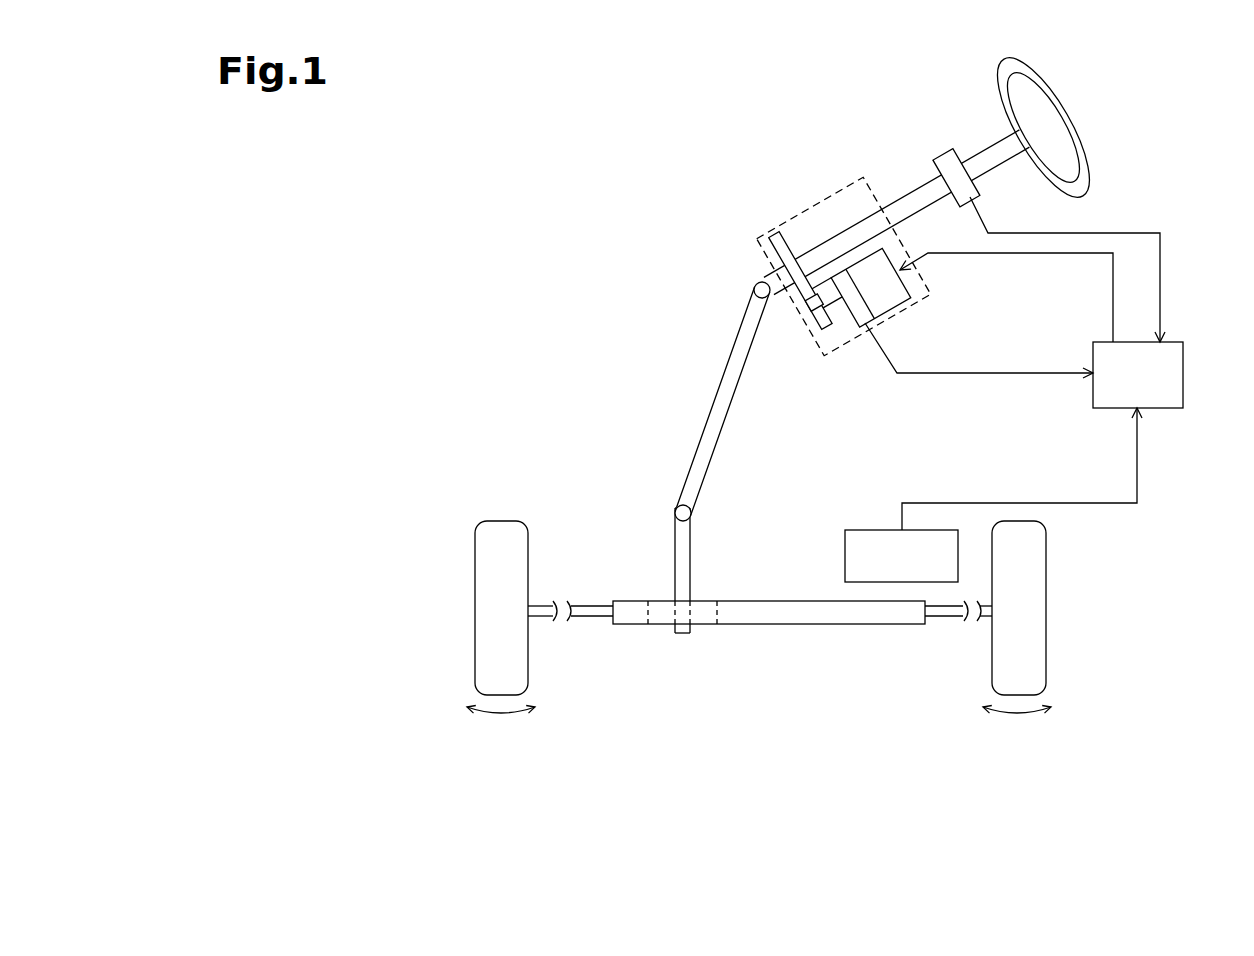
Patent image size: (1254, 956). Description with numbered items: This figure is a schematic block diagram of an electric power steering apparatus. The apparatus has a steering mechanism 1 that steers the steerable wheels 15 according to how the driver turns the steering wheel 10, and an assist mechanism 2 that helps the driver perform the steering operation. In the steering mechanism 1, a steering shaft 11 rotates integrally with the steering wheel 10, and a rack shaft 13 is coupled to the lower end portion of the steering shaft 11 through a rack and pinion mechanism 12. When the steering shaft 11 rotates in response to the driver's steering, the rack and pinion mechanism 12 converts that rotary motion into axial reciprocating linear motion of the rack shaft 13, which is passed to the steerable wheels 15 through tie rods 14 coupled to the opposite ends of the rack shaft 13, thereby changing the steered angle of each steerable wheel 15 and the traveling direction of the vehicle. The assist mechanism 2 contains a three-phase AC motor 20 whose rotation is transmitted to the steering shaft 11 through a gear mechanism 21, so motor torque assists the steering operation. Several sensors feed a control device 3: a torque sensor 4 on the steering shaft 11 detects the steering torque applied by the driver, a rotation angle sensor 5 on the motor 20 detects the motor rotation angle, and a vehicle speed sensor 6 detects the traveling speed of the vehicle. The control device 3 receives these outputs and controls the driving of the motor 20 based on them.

The steering mechanism 1 is at (738, 317).
The assist mechanism 2 is at (822, 198).
The control device 3 is at (1184, 373).
The torque sensor 4 is at (947, 151).
The rotation angle sensor 5 is at (847, 323).
The vehicle speed sensor 6 is at (866, 530).
The steering wheel 10 is at (1082, 120).
The steering shaft 11 is at (718, 393).
The rack and pinion mechanism 12 is at (726, 604).
The rack shaft 13 is at (790, 600).
The tie rods 14 is at (587, 618).
The steerable wheels 15 is at (475, 610).
The motor 20 is at (906, 292).
The gear mechanism 21 is at (801, 305).